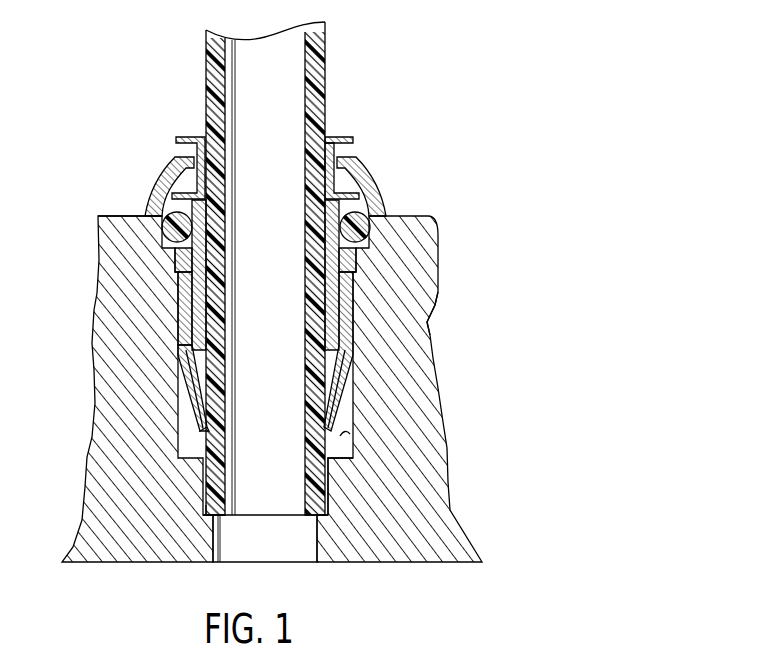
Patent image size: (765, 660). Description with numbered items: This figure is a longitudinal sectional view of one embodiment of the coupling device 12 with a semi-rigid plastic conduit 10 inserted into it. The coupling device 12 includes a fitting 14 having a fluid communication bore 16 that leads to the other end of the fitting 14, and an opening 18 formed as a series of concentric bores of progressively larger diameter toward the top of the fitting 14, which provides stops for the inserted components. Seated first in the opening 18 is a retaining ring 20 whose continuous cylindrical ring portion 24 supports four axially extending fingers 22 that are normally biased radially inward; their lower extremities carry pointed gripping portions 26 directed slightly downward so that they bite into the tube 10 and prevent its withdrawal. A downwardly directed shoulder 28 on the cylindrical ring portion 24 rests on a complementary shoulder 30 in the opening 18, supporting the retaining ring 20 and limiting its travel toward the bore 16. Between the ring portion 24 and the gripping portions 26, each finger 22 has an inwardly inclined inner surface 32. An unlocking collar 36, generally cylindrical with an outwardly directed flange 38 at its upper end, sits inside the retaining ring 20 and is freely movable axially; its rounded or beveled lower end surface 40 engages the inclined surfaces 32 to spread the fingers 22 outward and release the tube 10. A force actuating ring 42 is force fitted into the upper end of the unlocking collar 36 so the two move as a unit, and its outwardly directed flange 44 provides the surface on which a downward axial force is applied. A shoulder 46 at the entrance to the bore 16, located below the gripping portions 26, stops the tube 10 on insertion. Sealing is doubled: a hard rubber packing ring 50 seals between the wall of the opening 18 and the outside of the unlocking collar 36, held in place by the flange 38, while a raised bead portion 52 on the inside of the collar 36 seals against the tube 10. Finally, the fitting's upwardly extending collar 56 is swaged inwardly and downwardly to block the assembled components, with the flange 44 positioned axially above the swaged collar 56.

The conduit 10 is at (325, 70).
The coupling device 12 is at (276, 310).
The fitting 14 is at (438, 268).
The fluid communication bore 16 is at (316, 543).
The opening 18 is at (350, 432).
The retaining ring 20 is at (360, 247).
The fingers 22 is at (190, 383).
The cylindrical ring portion 24 is at (175, 262).
The gripping portions 26 is at (207, 432).
The downwardly directed shoulder 28 is at (178, 274).
The complementary shoulder 30 is at (420, 304).
The inwardly inclined inner surface 32 is at (195, 372).
The unlocking collar 36 is at (362, 205).
The outwardly directed flange 38 is at (357, 173).
The lower end surface 40 is at (336, 365).
The force actuating ring 42 is at (336, 150).
The outwardly directed flange 44 is at (347, 137).
The shoulder 46 is at (216, 506).
The fluid tight packing ring 50 is at (158, 215).
The raised bead portion 52 is at (208, 318).
The collar 56 is at (168, 175).